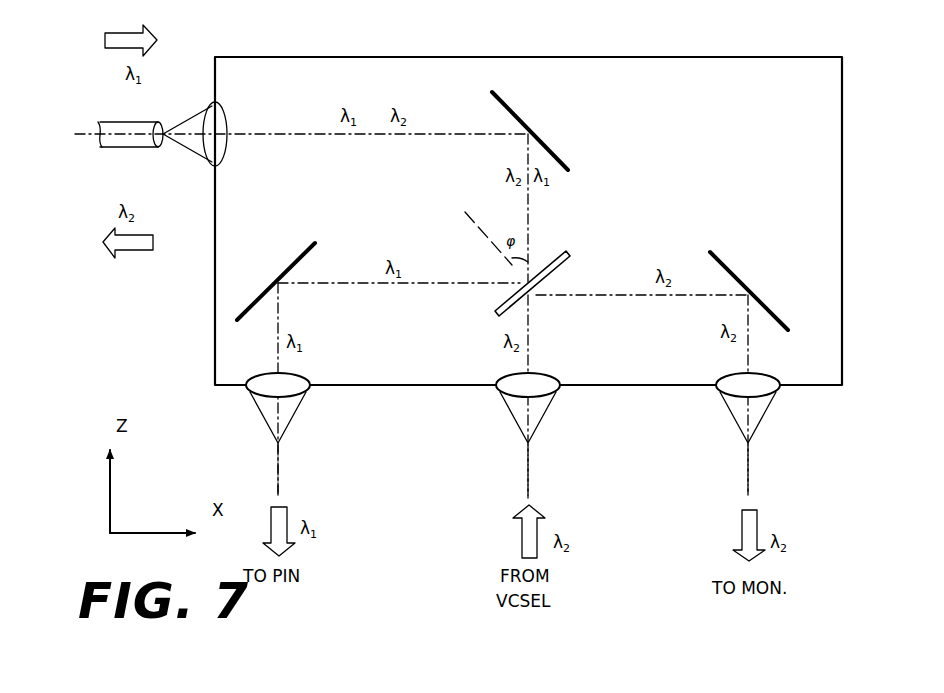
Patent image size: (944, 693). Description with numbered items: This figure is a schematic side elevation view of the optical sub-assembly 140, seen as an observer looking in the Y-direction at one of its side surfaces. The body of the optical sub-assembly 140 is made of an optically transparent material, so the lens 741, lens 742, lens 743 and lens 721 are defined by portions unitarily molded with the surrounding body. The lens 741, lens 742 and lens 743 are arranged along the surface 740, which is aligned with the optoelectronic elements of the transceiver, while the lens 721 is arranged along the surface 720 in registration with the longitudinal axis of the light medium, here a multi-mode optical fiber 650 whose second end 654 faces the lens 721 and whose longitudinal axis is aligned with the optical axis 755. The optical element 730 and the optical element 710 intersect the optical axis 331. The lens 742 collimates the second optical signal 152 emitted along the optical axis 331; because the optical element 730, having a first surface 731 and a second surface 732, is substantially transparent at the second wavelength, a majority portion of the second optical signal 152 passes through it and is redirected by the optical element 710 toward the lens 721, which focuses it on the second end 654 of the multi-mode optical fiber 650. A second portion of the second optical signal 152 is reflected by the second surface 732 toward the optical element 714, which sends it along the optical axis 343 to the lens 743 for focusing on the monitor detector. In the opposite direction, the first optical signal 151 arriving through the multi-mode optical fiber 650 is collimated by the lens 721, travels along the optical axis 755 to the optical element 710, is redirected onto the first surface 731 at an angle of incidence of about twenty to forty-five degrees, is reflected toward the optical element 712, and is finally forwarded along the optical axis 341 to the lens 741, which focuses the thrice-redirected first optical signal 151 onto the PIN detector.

The optical sub-assembly 140 is at (528, 221).
The first optical signal 151 is at (125, 43).
The second optical signal 152 is at (123, 243).
The optical axis 331 is at (528, 490).
The optical axis 341 is at (278, 473).
The optical axis 343 is at (753, 487).
The multi-mode optical fiber 650 is at (138, 150).
The second end 654 is at (150, 118).
The optical element 710 is at (523, 120).
The optical element 712 is at (315, 243).
The optical element 714 is at (730, 263).
The surface 720 is at (200, 307).
The lens 721 is at (223, 117).
The optical element 730 is at (571, 248).
The first surface 731 is at (500, 298).
The second surface 732 is at (560, 278).
The surface 740 is at (690, 392).
The lens 741 is at (298, 387).
The lens 742 is at (548, 387).
The lens 743 is at (763, 383).
The optical axis 755 is at (352, 137).